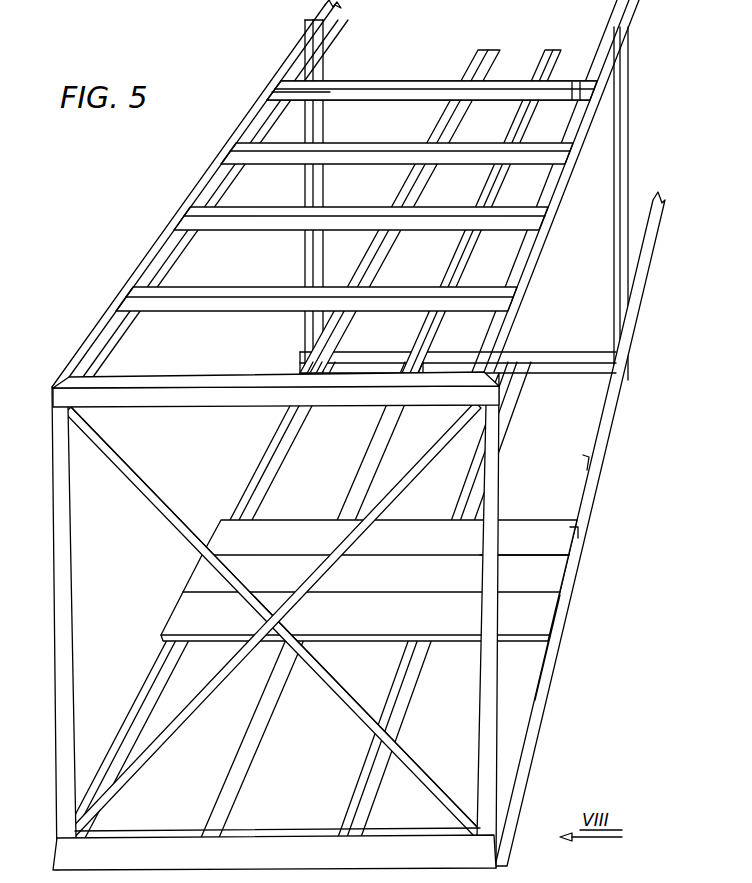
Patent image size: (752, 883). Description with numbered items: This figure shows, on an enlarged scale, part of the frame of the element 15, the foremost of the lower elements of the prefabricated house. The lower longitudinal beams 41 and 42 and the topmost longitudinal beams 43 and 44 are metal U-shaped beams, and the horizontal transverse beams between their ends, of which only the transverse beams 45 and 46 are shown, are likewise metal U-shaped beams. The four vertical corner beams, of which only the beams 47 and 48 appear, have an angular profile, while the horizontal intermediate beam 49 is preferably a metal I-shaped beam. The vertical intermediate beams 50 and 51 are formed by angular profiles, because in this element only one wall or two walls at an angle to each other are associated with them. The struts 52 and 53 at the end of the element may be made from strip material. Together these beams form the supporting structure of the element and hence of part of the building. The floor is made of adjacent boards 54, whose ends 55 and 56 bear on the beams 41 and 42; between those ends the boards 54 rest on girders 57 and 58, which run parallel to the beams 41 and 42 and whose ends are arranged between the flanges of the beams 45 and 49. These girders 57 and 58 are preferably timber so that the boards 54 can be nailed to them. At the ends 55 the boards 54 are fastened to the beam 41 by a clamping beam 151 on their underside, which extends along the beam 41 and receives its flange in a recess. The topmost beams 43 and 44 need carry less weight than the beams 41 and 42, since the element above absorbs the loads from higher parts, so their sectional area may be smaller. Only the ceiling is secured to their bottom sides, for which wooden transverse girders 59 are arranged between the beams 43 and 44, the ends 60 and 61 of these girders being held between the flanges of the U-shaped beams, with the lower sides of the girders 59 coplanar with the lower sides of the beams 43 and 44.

The element 15 is at (612, 637).
The longitudinal beam 41 is at (580, 529).
The longitudinal beam 42 is at (198, 601).
The longitudinal beam 43 is at (561, 186).
The longitudinal beam 44 is at (196, 193).
The transverse beam 45 is at (274, 831).
The transverse beam 46 is at (276, 379).
The vertical angular beam 47 is at (471, 620).
The vertical angular beam 48 is at (76, 628).
The horizontal intermediate beam 49 is at (458, 342).
The vertical intermediate beam 50 is at (639, 203).
The vertical intermediate beam 51 is at (332, 196).
The strut 52 is at (273, 621).
The strut 53 is at (273, 622).
The board 54 is at (524, 522).
The board end 55 is at (594, 538).
The board end 56 is at (369, 567).
The girder 57 is at (453, 601).
The girder 58 is at (311, 601).
The transverse girder 59 is at (432, 75).
The girder end 60 is at (301, 111).
The girder end 61 is at (582, 75).
The clamping beam 151 is at (563, 465).